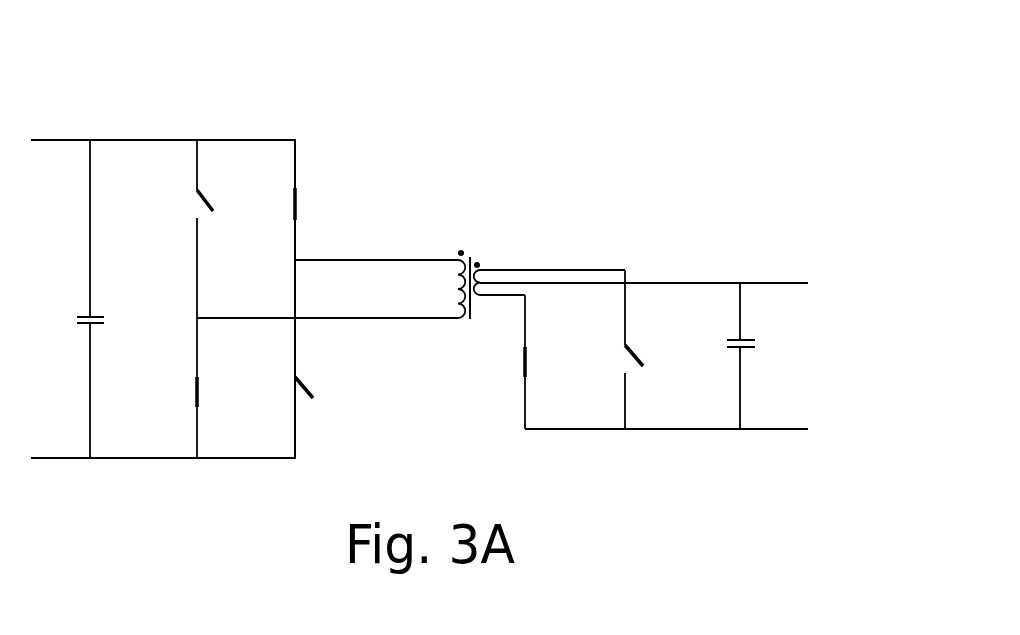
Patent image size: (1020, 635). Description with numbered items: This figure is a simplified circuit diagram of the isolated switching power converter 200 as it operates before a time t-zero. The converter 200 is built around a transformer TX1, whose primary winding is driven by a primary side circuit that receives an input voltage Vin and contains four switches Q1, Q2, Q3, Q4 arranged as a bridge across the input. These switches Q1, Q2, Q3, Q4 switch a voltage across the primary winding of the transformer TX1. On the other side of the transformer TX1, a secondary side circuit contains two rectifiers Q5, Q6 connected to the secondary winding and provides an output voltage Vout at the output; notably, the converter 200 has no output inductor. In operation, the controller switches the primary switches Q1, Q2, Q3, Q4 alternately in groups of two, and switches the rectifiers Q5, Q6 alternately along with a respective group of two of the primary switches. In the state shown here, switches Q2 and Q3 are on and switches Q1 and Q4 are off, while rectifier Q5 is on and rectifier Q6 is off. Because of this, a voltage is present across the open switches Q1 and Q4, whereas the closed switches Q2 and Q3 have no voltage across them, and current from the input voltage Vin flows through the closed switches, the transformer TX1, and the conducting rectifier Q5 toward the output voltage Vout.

The isolated switching power converter 200 is at (153, 52).
The primary switch Q1 is at (224, 229).
The primary switch Q2 is at (220, 388).
The primary switch Q3 is at (317, 229).
The primary switch Q4 is at (324, 388).
The transformer TX1 is at (467, 267).
The rectifier Q5 is at (549, 362).
The rectifier Q6 is at (654, 349).
The input voltage Vin is at (58, 299).
The output voltage Vout is at (788, 356).